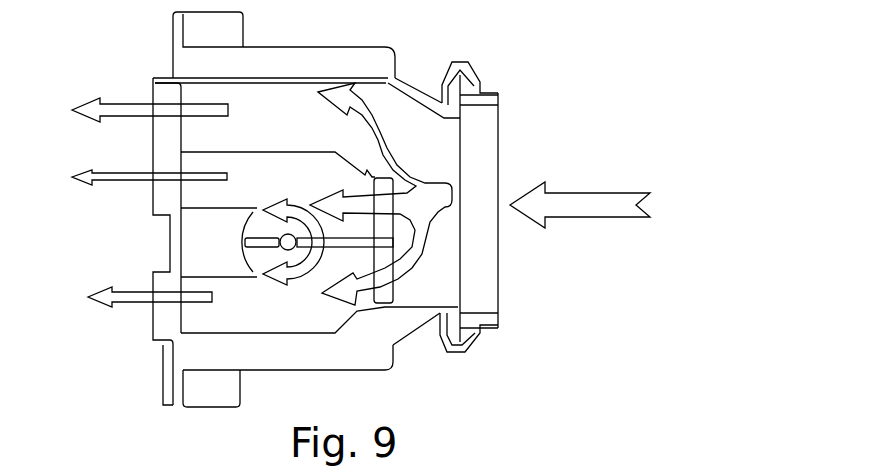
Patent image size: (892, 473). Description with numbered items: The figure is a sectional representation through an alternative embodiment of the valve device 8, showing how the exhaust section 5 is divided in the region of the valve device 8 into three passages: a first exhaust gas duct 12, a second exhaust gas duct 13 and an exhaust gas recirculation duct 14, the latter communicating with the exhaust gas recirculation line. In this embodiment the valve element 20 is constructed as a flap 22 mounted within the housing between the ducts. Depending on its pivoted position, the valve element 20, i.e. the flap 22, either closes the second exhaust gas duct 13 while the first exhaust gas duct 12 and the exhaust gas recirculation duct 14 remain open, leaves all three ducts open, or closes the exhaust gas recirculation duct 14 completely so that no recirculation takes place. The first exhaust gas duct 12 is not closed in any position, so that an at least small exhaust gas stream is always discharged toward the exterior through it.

The exhaust section 5 is at (523, 153).
The valve device 8 is at (496, 72).
The first exhaust gas duct 12 is at (263, 130).
The second exhaust gas duct 13 is at (250, 205).
The exhaust gas recirculation duct 14 is at (180, 330).
The valve element 20 is at (335, 242).
The flap 22 is at (432, 378).